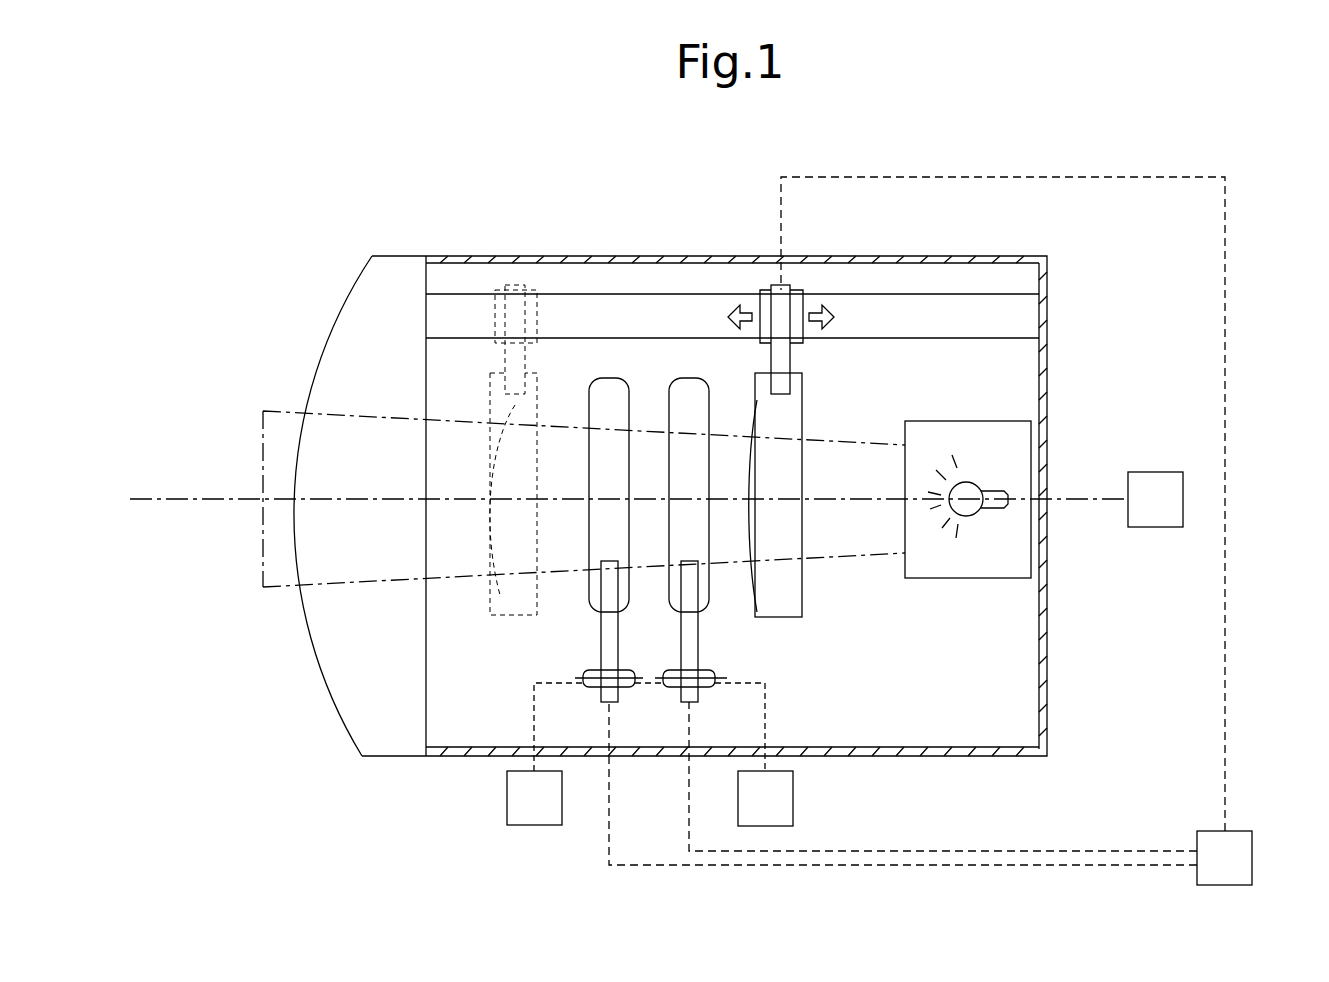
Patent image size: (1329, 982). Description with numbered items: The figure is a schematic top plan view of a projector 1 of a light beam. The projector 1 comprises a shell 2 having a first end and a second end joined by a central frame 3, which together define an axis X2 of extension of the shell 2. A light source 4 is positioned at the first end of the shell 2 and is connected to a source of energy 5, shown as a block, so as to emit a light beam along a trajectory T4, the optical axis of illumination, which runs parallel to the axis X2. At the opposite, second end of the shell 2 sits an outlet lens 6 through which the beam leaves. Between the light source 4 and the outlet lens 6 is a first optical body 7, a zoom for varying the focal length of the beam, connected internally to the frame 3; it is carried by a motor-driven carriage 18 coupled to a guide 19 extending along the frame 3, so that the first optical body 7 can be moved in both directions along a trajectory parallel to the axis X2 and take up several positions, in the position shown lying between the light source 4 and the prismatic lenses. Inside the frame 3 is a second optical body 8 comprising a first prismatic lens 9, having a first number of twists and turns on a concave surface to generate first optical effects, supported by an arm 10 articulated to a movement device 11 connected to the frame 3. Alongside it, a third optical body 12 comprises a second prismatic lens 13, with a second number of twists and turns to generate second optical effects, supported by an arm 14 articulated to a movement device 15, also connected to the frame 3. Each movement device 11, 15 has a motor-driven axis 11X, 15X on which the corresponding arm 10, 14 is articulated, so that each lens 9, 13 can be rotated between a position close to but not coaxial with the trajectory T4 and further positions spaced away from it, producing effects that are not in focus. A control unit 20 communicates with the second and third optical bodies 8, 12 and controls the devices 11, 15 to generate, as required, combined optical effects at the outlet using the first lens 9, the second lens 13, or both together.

The projector 1 is at (389, 188).
The shell 2 is at (1047, 378).
The central frame 3 is at (524, 256).
The light source 4 is at (985, 497).
The source of energy 5 is at (1145, 509).
The outlet lens 6 is at (385, 308).
The first optical body 7 is at (781, 596).
The second optical body 8 is at (697, 620).
The first prismatic lens 9 is at (682, 397).
The arm 10 is at (732, 640).
The movement device 11 is at (769, 798).
The motor-driven axis 11X is at (655, 683).
The third optical body 12 is at (555, 643).
The second prismatic lens 13 is at (600, 403).
The arm 14 is at (600, 624).
The movement device 15 is at (533, 795).
The motor-driven axis 15X is at (556, 683).
The motor-driven carriage 18 is at (781, 318).
The guide 19 is at (970, 320).
The control unit 20 is at (1232, 857).
The axis of extension X2 is at (203, 500).
The trajectory T4 is at (853, 555).